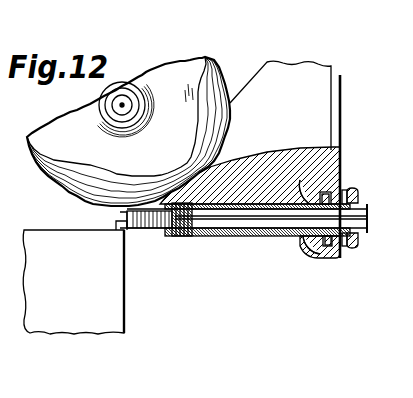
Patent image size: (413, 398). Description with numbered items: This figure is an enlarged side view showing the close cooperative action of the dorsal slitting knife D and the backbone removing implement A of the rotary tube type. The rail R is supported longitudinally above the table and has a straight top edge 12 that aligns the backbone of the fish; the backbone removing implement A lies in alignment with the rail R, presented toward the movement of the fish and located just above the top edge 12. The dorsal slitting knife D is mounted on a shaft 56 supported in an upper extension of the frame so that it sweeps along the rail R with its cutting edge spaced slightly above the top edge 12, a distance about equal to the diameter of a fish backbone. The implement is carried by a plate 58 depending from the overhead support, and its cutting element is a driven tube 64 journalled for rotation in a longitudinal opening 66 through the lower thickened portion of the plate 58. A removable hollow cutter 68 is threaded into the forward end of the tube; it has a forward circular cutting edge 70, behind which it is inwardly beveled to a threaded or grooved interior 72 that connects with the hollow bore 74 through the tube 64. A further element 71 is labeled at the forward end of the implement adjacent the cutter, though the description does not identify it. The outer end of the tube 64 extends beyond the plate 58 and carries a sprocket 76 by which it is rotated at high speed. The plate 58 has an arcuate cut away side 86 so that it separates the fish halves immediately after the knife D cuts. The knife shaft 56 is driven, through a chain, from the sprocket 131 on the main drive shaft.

The top edge 12 is at (60, 230).
The shaft 56 is at (120, 105).
The plate 58 is at (318, 113).
The driven tube 64 is at (290, 238).
The longitudinal opening 66 is at (316, 171).
The hollow cutter 68 is at (168, 236).
The circular cutting edge 70 is at (120, 230).
The spindle end 71 is at (125, 218).
The threaded or grooved interior 72 is at (143, 236).
The hollow bore 74 is at (254, 236).
The sprocket 76 is at (358, 197).
The arcuate cut away side 86 is at (232, 127).
The sprocket 131 is at (313, 3).
The backbone removing implement A is at (216, 245).
The dorsal slitting knife D is at (40, 152).
The rail R is at (107, 297).